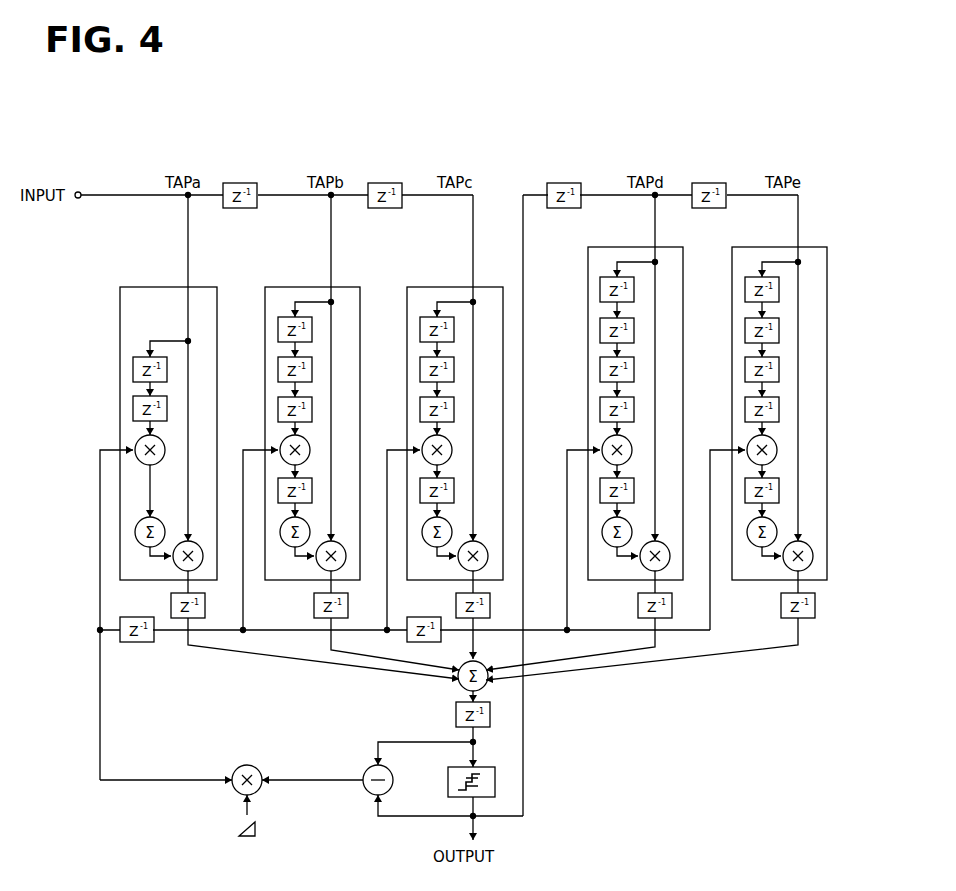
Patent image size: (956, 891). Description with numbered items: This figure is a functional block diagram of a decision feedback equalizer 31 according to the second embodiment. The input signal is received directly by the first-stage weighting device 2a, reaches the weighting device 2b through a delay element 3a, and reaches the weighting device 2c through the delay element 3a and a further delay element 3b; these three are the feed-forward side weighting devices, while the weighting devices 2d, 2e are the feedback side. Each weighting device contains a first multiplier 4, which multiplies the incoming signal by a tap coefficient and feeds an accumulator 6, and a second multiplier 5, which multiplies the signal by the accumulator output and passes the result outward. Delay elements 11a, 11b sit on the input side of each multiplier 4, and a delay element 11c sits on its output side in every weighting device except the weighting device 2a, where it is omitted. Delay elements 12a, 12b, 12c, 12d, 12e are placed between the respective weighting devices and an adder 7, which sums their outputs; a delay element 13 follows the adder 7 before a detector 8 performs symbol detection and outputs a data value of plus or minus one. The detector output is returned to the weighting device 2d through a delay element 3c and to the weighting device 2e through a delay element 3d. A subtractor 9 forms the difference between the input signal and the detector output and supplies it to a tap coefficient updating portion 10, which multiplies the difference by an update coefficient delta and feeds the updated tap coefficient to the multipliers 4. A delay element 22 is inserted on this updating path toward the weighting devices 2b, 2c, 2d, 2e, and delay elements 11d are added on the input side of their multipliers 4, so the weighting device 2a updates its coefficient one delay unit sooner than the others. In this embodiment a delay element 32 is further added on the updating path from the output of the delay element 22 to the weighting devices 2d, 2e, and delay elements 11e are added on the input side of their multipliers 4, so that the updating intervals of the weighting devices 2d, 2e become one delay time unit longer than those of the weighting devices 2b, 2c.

The weighting device 2a is at (143, 433).
The weighting device 2b is at (289, 425).
The weighting device 2c is at (410, 287).
The weighting device 2d is at (615, 405).
The weighting device 2e is at (735, 247).
The delay element 3a is at (240, 183).
The delay element 3b is at (385, 183).
The delay element 3c is at (563, 183).
The delay element 3d is at (709, 183).
The multiplier 4 is at (162, 441).
The multiplier 5 is at (198, 543).
The accumulator 6 is at (158, 517).
The adder 7 is at (457, 686).
The detector 8 is at (486, 767).
The subtractor 9 is at (372, 765).
The tap coefficient updating portion 10 is at (247, 765).
The delay element 11a is at (133, 370).
The delay element 11b is at (133, 409).
The delay element 11c is at (278, 490).
The delay element 11d is at (278, 410).
The delay element 11e is at (600, 410).
The delay element 12a is at (215, 602).
The delay element 12b is at (314, 608).
The delay element 12c is at (456, 608).
The delay element 12d is at (638, 608).
The delay element 12e is at (781, 608).
The delay element 13 is at (456, 716).
The delay element 22 is at (140, 643).
The decision feedback equalizer 31 is at (589, 140).
The delay element 32 is at (430, 643).